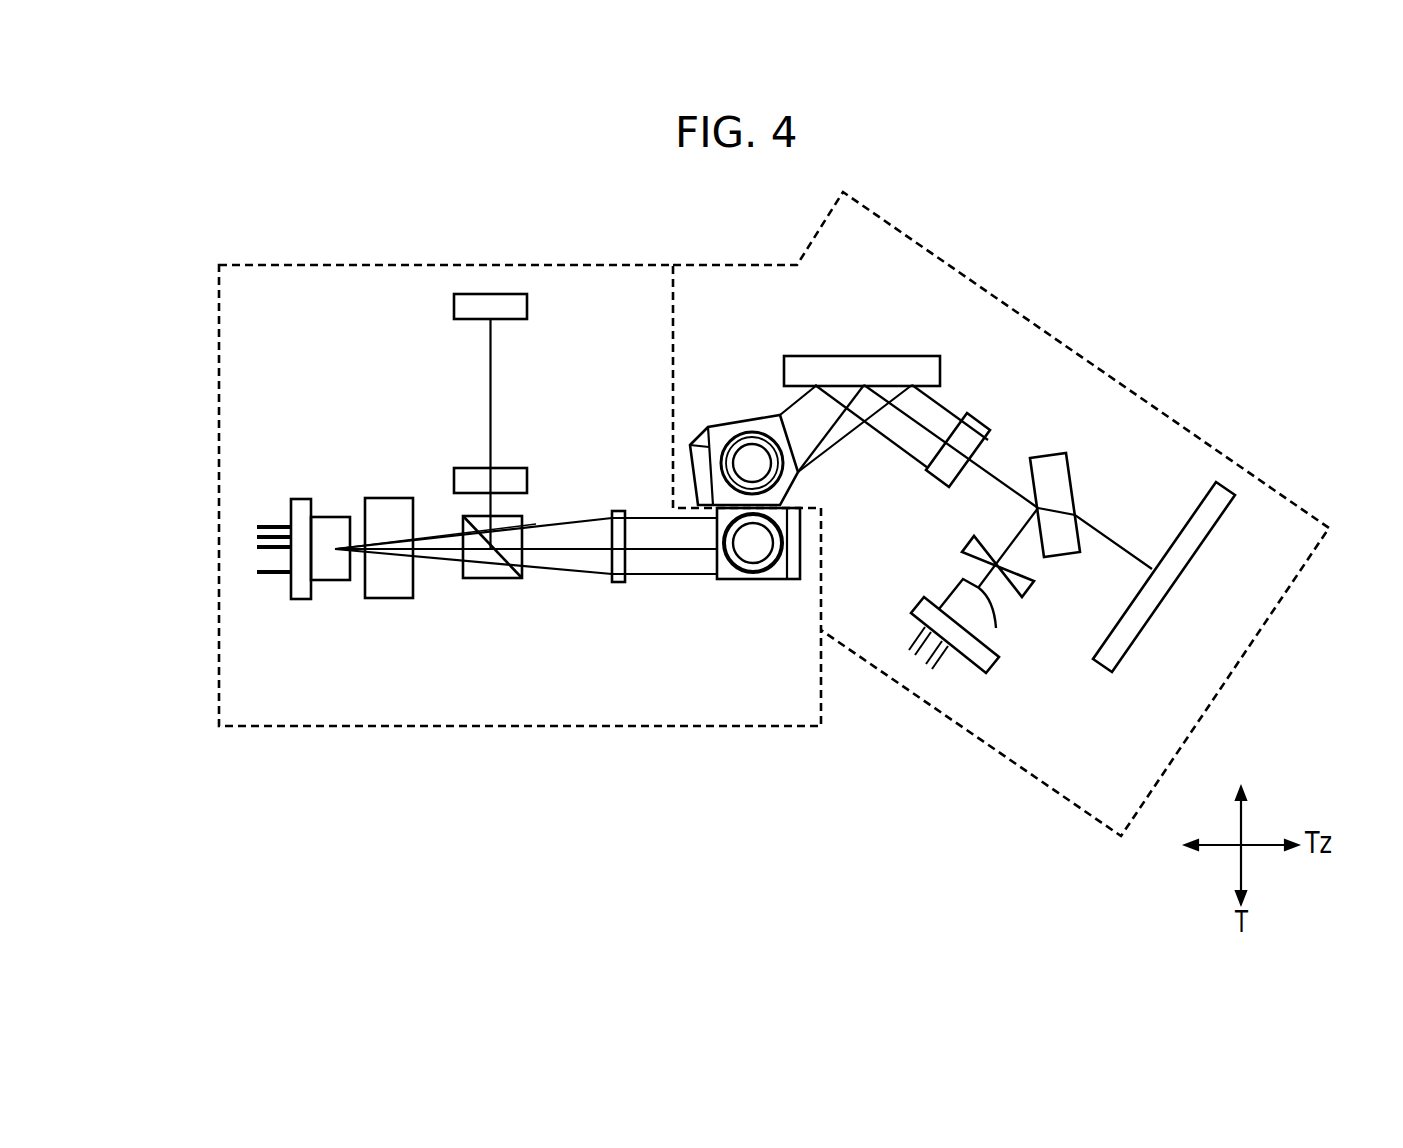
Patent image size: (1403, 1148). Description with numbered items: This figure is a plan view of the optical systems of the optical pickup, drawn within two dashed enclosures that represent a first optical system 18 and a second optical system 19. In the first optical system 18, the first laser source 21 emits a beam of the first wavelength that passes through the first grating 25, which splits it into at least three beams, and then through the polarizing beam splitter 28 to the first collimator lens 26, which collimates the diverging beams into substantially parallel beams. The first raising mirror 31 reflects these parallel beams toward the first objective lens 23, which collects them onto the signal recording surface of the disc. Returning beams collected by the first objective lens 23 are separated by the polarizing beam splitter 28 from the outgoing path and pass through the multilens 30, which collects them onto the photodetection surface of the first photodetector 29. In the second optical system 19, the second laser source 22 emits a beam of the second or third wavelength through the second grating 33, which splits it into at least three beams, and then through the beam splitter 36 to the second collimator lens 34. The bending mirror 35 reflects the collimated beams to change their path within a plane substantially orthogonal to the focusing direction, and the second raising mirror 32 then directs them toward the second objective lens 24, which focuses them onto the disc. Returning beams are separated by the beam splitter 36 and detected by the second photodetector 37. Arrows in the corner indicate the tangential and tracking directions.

The first optical system 18 is at (515, 727).
The second optical system 19 is at (1016, 768).
The first laser source 21 is at (329, 518).
The second laser source 22 is at (988, 633).
The first objective lens 23 is at (753, 560).
The second objective lens 24 is at (735, 465).
The first grating 25 is at (388, 500).
The first collimator lens 26 is at (617, 583).
The polarizing beam splitter 28 is at (493, 578).
The first photodetector 29 is at (527, 304).
The multilens 30 is at (527, 478).
The first raising mirror 31 is at (797, 553).
The second raising mirror 32 is at (740, 426).
The second grating 33 is at (1032, 585).
The second collimator lens 34 is at (969, 415).
The bending mirror 35 is at (857, 361).
The beam splitter 36 is at (1065, 480).
The second photodetector 37 is at (1167, 586).